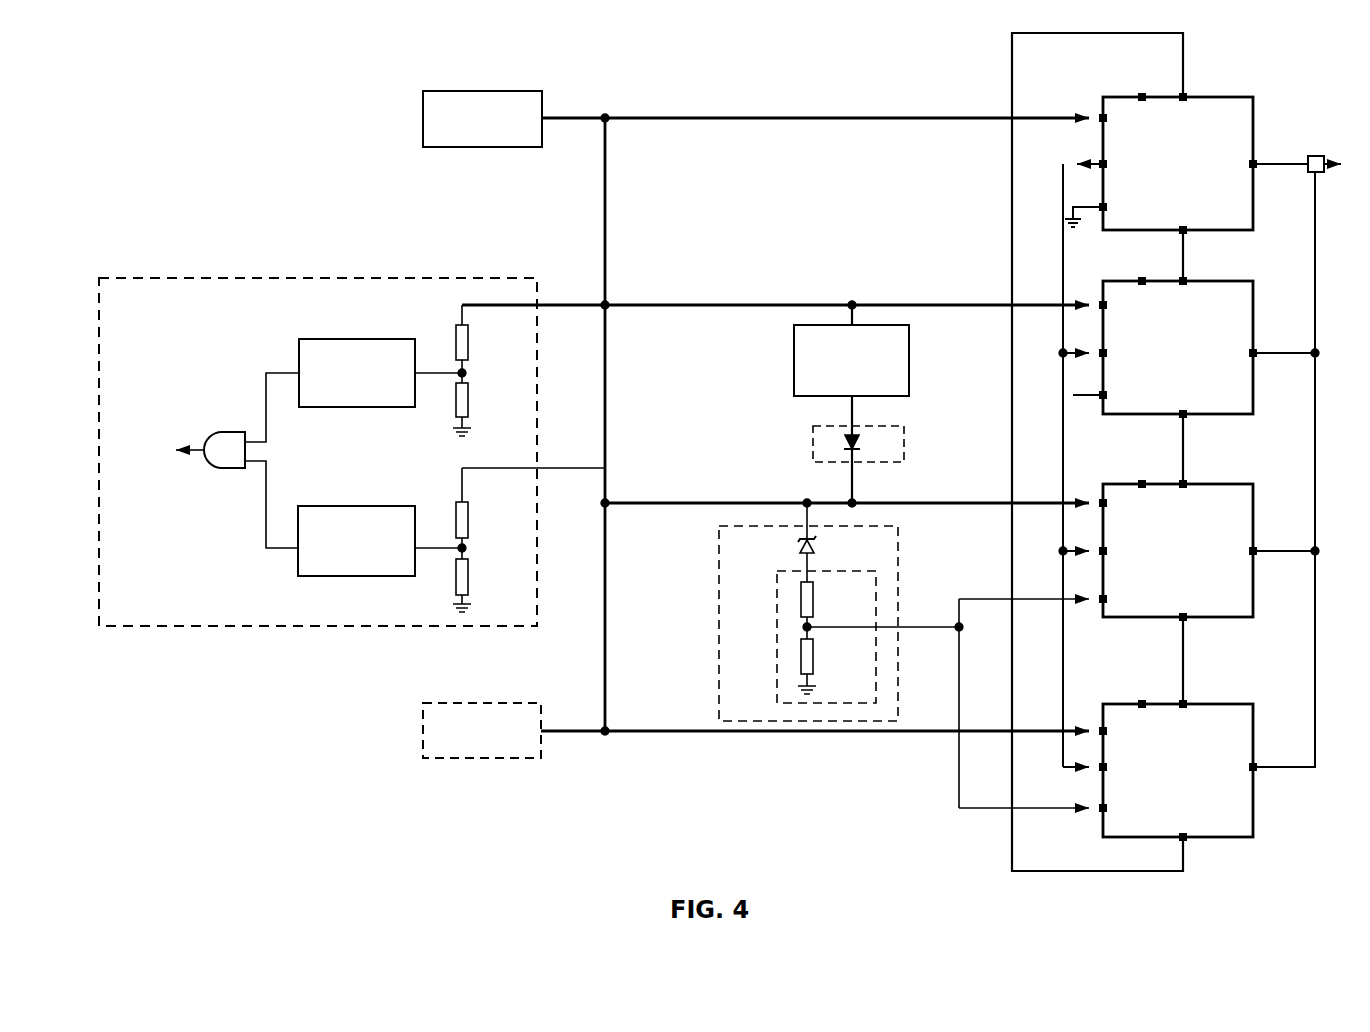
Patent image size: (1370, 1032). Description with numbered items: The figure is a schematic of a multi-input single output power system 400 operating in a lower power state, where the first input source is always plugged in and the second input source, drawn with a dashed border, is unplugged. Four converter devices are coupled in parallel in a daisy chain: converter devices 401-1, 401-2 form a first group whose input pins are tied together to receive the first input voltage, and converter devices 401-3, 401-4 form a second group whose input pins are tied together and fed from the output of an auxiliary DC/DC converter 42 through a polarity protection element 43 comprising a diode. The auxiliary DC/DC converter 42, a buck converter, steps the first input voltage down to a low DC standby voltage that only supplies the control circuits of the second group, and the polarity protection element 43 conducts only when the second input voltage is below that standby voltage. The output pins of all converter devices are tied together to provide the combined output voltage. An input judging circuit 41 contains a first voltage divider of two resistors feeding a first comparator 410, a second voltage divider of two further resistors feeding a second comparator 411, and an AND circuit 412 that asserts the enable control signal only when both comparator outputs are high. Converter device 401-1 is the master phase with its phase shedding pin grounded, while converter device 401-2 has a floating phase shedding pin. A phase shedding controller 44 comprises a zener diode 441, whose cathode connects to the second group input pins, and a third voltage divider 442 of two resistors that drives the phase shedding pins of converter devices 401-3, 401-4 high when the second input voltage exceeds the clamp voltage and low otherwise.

The multi-input single output power system 400 is at (158, 73).
The input judging circuit 41 is at (140, 628).
The first comparator 410 is at (345, 408).
The second comparator 411 is at (321, 577).
The AND circuit 412 is at (228, 470).
The auxiliary DC/DC converter 42 is at (794, 358).
The polarity protection element 43 is at (836, 462).
The phase shedding controller 44 is at (898, 570).
The zener diode 441 is at (800, 552).
The third voltage divider 442 is at (777, 690).
The converter device 401-1 is at (1165, 233).
The converter device 401-2 is at (1166, 416).
The converter device 401-3 is at (1166, 620).
The converter device 401-4 is at (1166, 840).